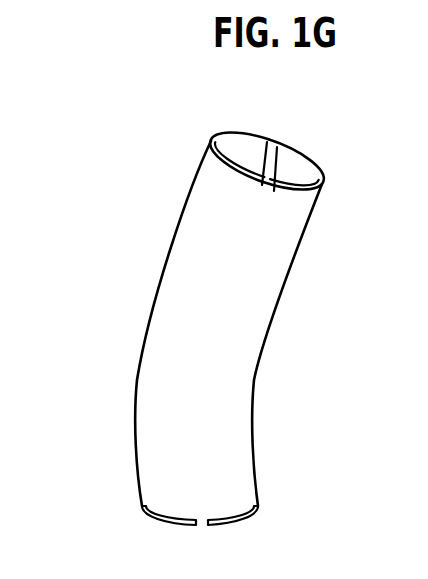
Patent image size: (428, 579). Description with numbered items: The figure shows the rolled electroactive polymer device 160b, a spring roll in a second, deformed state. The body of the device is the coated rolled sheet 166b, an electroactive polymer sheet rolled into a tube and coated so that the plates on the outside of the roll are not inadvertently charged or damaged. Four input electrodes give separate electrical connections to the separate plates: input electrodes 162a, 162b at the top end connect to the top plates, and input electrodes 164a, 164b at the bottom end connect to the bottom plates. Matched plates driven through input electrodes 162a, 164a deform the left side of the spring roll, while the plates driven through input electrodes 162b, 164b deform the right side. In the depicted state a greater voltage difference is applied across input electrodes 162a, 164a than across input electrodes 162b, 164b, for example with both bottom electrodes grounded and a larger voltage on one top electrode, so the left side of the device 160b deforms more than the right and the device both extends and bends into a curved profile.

The rolled electroactive polymer device 160b is at (82, 125).
The input electrode 162a is at (232, 150).
The input electrode 162b is at (290, 168).
The input electrode 164a is at (153, 525).
The input electrode 164b is at (240, 525).
The coated rolled sheet 166b is at (202, 352).